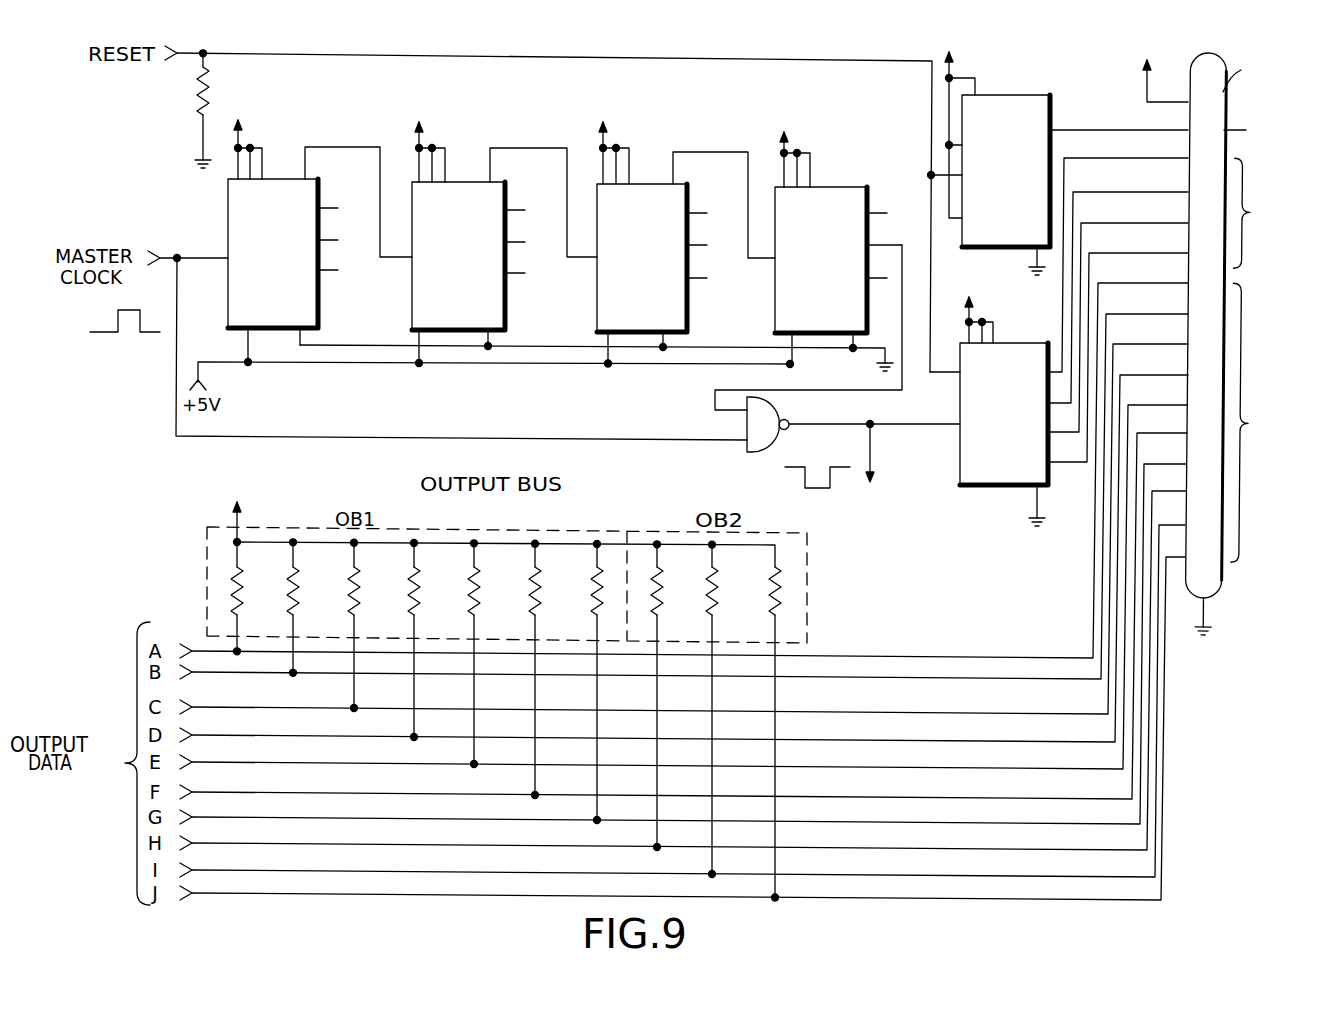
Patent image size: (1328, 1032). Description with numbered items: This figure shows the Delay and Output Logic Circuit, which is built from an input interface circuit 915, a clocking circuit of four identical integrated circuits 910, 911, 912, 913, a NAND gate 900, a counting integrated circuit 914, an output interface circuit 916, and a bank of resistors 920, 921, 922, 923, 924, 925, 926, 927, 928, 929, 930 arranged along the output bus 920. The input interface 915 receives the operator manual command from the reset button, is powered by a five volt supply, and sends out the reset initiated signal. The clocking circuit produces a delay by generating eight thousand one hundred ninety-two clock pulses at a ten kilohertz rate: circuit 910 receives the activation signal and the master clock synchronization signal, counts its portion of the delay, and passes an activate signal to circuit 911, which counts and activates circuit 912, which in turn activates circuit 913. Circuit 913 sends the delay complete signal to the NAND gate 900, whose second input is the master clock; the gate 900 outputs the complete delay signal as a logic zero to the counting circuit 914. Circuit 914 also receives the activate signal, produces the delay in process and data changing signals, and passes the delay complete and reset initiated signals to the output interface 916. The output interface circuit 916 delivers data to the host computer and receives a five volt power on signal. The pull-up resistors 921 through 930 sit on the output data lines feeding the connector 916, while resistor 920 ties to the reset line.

The NAND gate 900 is at (779, 412).
The integrated circuit 910 is at (228, 203).
The integrated circuit 911 is at (412, 294).
The integrated circuit 912 is at (597, 295).
The integrated circuit 913 is at (775, 295).
The counting circuit 914 is at (960, 445).
The input interface circuit 915 is at (1026, 95).
The output interface circuit 916 is at (1221, 570).
The resistor 920 is at (200, 94).
The resistor 921 is at (259, 598).
The resistor 922 is at (315, 609).
The resistor 923 is at (376, 627).
The resistor 924 is at (436, 642).
The resistor 925 is at (496, 655).
The resistor 926 is at (556, 671).
The resistor 927 is at (597, 592).
The resistor 928 is at (678, 697).
The resistor 929 is at (734, 711).
The resistor 930 is at (787, 578).